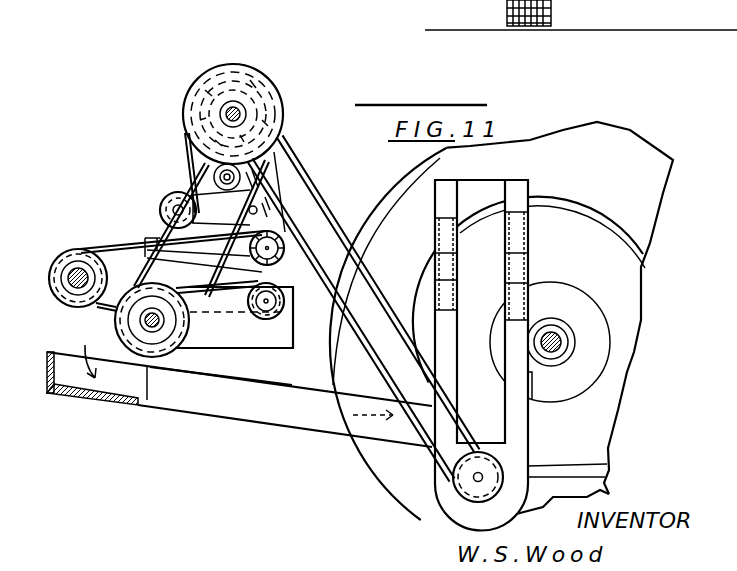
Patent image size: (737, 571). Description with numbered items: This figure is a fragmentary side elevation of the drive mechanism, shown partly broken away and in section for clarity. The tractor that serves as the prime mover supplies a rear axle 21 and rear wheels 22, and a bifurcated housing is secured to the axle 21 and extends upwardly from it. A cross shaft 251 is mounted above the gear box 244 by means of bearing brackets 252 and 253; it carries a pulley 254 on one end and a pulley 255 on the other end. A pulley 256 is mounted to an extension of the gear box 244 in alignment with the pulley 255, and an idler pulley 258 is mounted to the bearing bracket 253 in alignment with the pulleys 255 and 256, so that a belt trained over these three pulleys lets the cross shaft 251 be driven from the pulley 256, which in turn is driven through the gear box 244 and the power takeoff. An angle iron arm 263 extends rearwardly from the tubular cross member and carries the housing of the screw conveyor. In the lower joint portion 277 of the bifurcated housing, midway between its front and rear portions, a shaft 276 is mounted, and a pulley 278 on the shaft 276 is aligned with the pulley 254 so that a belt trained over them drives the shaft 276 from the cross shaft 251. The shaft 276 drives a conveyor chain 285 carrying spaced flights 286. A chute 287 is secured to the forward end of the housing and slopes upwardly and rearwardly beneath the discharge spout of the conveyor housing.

The rear axle 21 is at (571, 351).
The rear wheels 22 is at (387, 470).
The gear box 244 is at (248, 342).
The cross shaft 251 is at (234, 108).
The bearing bracket 252 is at (192, 93).
The bearing bracket 253 is at (267, 192).
The pulley 254 is at (267, 72).
The pulley 255 is at (285, 105).
The pulley 256 is at (112, 327).
The idler pulley 258 is at (173, 193).
The angle iron arm 263 is at (152, 246).
The shaft 276 is at (562, 496).
The lower joint portion 277 is at (517, 457).
The pulley 278 is at (478, 480).
The conveyor chain 285 is at (451, 275).
The flights 286 is at (528, 243).
The chute 287 is at (130, 383).